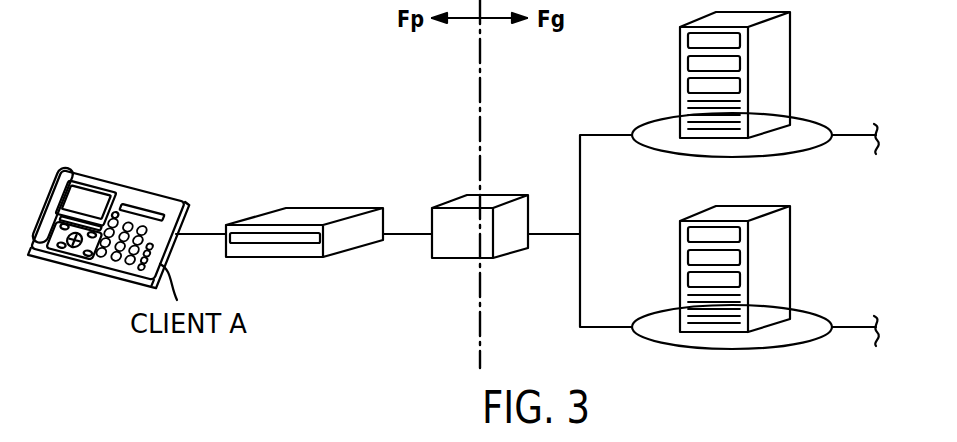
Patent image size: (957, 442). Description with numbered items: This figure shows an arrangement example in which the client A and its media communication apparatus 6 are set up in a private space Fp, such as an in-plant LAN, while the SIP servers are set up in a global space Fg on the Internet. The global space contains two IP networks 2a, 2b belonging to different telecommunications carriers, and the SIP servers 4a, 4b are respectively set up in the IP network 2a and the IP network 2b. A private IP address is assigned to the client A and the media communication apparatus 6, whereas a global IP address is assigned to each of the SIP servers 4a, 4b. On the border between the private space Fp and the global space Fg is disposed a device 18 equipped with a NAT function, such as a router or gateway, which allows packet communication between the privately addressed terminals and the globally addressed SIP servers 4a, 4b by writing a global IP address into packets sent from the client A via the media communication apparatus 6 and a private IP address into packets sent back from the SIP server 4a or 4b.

The IP network 2a is at (815, 148).
The IP network 2b is at (815, 340).
The SIP server 4a is at (790, 68).
The SIP server 4b is at (790, 260).
The media communication apparatus 6 is at (348, 252).
The device equipped with a NAT function 18 is at (453, 200).